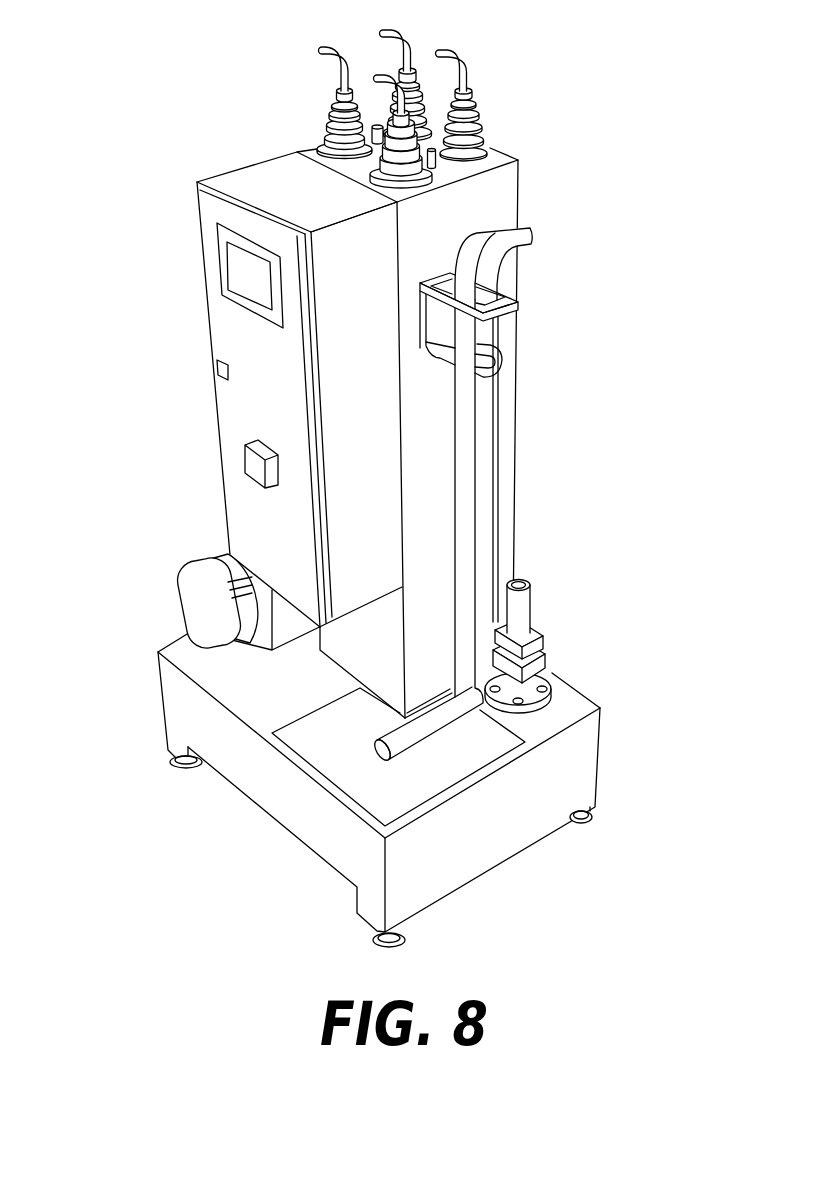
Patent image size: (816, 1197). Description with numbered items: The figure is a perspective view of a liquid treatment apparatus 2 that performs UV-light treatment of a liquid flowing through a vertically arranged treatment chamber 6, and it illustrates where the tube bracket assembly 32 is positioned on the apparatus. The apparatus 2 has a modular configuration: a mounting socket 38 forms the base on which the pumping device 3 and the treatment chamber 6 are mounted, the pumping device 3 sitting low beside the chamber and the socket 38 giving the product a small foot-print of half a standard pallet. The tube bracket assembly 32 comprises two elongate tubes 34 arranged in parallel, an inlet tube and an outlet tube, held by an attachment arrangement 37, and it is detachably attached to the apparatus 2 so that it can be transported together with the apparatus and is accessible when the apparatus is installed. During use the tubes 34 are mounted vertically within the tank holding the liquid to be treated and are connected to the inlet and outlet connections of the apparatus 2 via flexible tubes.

The apparatus 2 is at (158, 134).
The pumping device 3 is at (188, 593).
The treatment chamber 6 is at (367, 363).
The tube bracket assembly 32 is at (553, 321).
The elongate tubes 34 is at (468, 478).
The attachment arrangement 37 is at (505, 292).
The mounting socket 38 is at (505, 826).